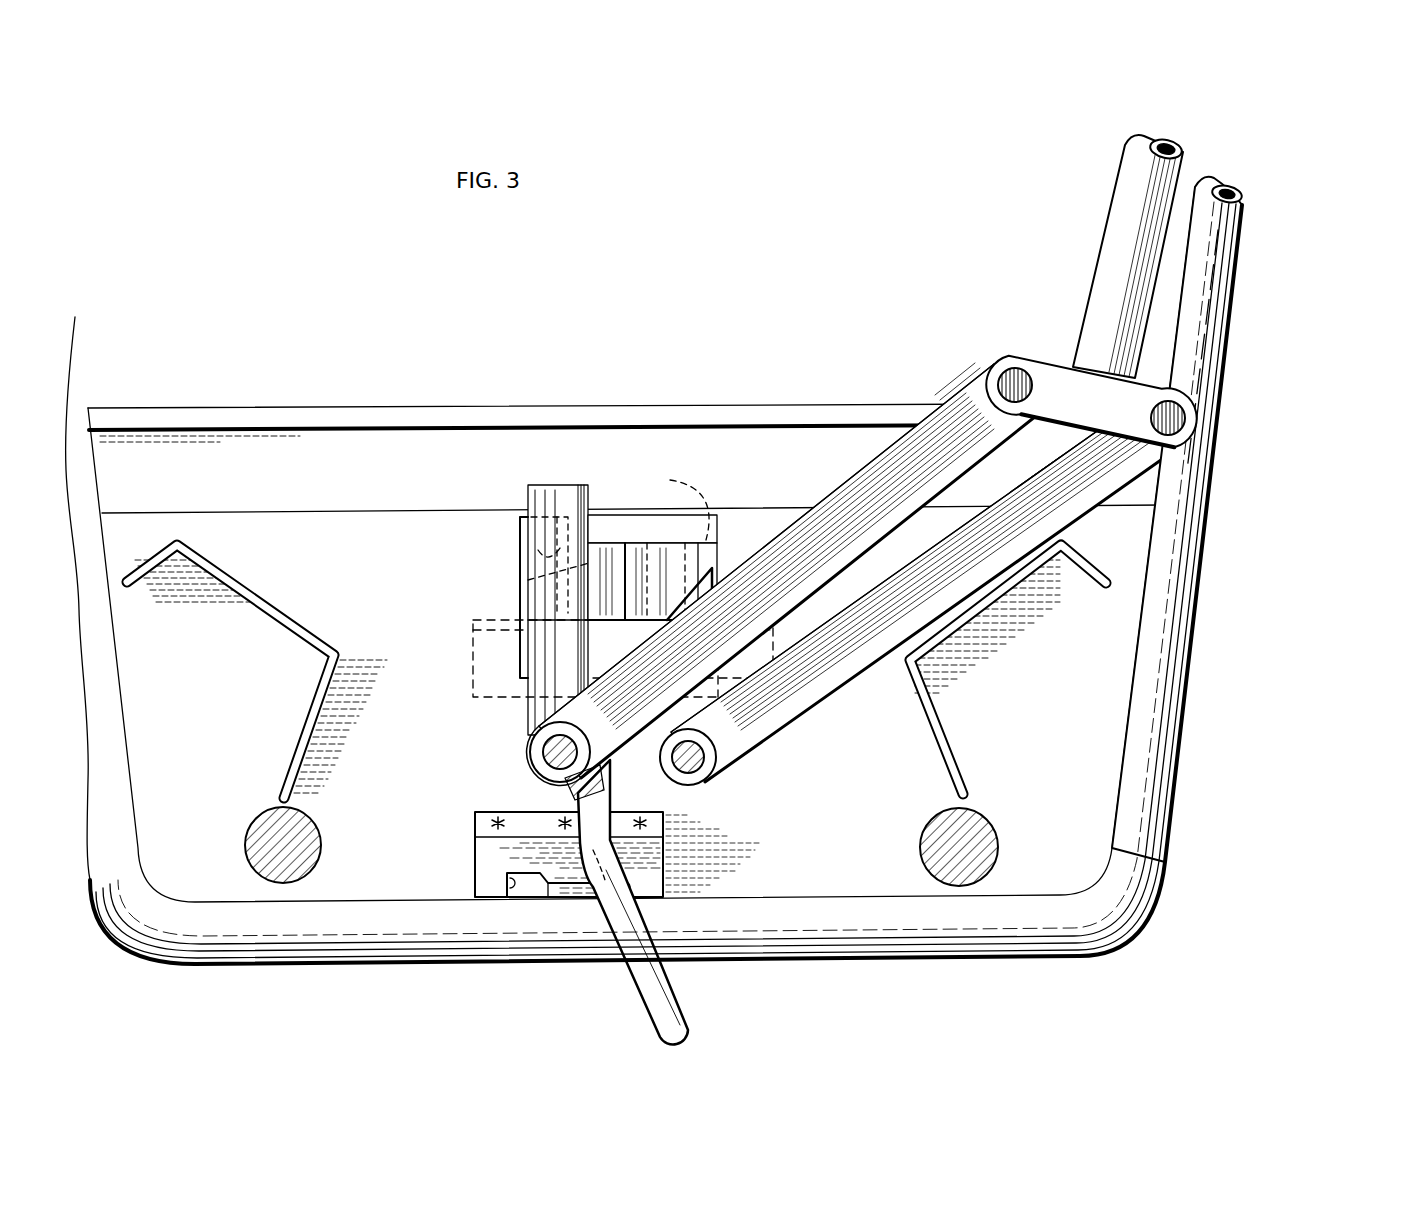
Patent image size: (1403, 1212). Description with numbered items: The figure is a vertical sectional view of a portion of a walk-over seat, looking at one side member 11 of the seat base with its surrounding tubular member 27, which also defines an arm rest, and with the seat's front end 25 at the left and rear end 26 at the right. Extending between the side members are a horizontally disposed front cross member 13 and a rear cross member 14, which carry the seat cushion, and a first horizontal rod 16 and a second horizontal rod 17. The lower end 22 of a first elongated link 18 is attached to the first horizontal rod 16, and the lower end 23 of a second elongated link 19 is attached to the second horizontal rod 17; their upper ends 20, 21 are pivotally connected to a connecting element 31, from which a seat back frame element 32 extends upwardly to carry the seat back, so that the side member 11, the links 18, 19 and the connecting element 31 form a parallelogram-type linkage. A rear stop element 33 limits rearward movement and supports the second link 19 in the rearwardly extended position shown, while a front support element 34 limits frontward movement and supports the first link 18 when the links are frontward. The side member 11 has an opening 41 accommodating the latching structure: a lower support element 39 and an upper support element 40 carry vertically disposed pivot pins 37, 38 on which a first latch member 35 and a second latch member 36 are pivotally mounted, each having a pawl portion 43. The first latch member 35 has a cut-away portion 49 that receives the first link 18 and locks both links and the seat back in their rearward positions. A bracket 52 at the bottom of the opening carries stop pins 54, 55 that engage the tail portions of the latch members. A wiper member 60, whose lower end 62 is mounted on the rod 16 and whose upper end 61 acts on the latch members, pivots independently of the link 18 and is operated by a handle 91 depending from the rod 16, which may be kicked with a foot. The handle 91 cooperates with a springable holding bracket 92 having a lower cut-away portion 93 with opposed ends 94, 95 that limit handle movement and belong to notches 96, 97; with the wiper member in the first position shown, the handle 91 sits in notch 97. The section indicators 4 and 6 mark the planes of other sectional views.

The side member 11 is at (360, 548).
The front cross member 13 is at (253, 830).
The rear cross member 14 is at (978, 832).
The first horizontal rod 16 is at (555, 765).
The second horizontal rod 17 is at (695, 775).
The first elongated link 18 is at (878, 505).
The second elongated link 19 is at (1012, 536).
The upper end of first link 20 is at (960, 382).
The upper end of second link 21 is at (1048, 470).
The lower end of first link 22 is at (615, 760).
The lower end of second link 23 is at (752, 738).
The front end of seat 25 is at (120, 848).
The rear end of seat 26 is at (1180, 665).
The tubular member 27 is at (1250, 222).
The connecting element 31 is at (1085, 423).
The seat back frame element 32 is at (1120, 180).
The rear stop element 33 is at (930, 712).
The front support element 34 is at (315, 706).
The first latch member 35 is at (652, 555).
The second latch member 36 is at (600, 520).
The pivot pin 37 is at (677, 520).
The second pivot pin 38 is at (528, 595).
The lower support element 39 is at (603, 651).
The upper support element 40 is at (622, 520).
The opening 41 is at (520, 612).
The pawl portion 43 is at (697, 575).
The cut-away portion 49 is at (700, 590).
The bracket 52 is at (473, 655).
The stop pin 54 is at (703, 508).
The stop pin 55 is at (532, 542).
The wiper member 60 is at (537, 673).
The upper end of wiper member 61 is at (528, 495).
The lower end of wiper member 62 is at (535, 746).
The handle 91 is at (690, 1010).
The holding bracket 92 is at (475, 845).
The lower cut-away portion 93 is at (563, 885).
The cut-away end 94 is at (475, 883).
The cut-away end 95 is at (632, 886).
The notch 96 is at (515, 895).
The notch 97 is at (600, 895).
The section line 4 is at (557, 393).
The section line 6 is at (505, 540).